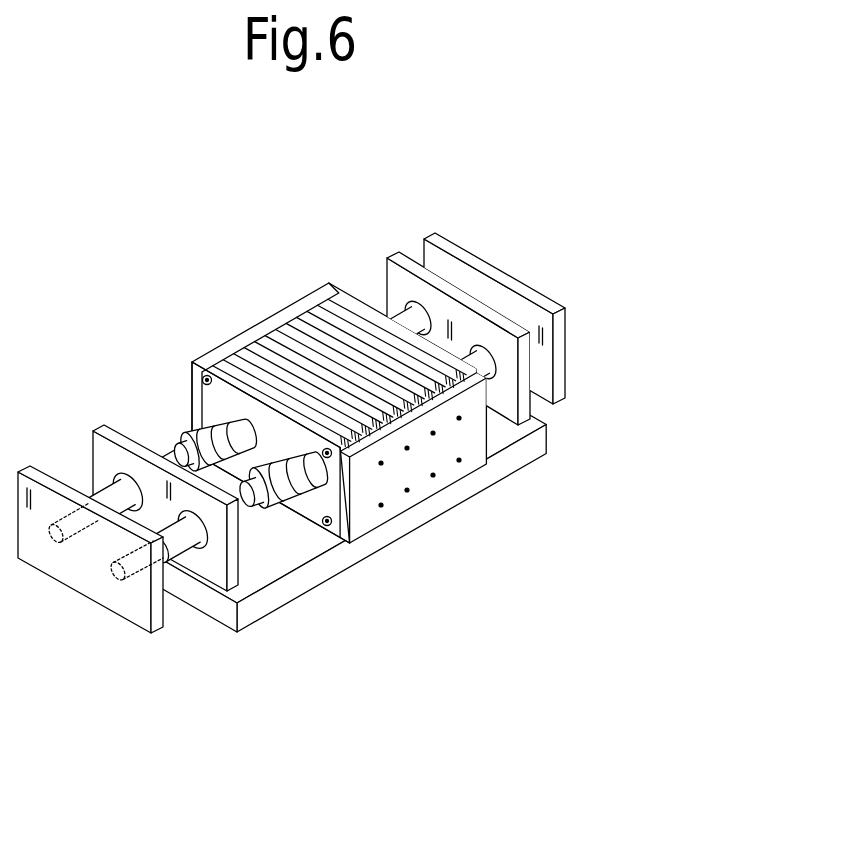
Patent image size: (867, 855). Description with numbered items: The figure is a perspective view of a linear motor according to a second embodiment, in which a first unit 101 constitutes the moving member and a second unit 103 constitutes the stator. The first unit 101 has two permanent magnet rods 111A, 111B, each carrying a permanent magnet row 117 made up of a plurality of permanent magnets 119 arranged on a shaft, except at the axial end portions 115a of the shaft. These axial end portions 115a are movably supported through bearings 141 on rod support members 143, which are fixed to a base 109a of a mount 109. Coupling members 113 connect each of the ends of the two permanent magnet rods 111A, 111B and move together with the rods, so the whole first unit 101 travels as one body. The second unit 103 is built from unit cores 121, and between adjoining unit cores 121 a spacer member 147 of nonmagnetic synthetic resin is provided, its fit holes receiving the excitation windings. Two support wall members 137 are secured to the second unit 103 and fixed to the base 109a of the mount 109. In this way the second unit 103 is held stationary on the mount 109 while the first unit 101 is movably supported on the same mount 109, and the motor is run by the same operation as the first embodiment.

The first unit 101 is at (277, 513).
The second unit 103 is at (353, 497).
The mount 109 is at (471, 491).
The base 109a is at (243, 617).
The permanent magnet rod 111A is at (195, 437).
The permanent magnet rod 111B is at (297, 503).
The coupling member 113 is at (70, 569).
The axial end portion 115a is at (177, 454).
The permanent magnet row 117 is at (193, 437).
The permanent magnet 119 is at (275, 451).
The unit core 121 is at (345, 298).
The support wall member 137 is at (295, 302).
The bearing 141 is at (120, 474).
The rod support member 143 is at (525, 410).
The spacer member 147 is at (324, 294).